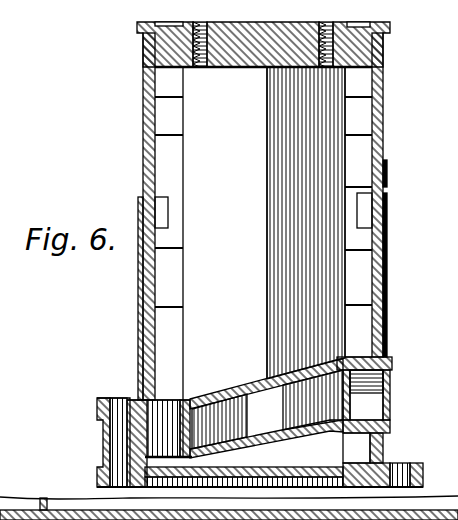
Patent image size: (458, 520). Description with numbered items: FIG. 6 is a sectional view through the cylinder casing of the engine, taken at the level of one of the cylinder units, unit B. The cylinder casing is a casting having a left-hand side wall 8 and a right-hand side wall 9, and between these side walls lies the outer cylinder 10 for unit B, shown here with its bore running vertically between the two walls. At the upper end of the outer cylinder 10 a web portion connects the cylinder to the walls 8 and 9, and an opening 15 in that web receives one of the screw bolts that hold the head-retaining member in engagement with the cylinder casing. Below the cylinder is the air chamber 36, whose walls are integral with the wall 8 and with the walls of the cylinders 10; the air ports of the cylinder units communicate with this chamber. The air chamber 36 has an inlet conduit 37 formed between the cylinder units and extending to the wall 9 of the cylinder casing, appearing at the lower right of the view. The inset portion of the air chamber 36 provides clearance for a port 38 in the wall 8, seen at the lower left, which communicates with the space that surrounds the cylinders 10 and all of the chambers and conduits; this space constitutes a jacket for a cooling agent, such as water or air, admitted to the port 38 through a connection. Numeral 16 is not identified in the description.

The side wall 8 is at (143, 113).
The side wall 9 is at (383, 110).
The outer cylinder 10 is at (281, 223).
The opening 15 is at (200, 70).
The cover block 16 is at (257, 58).
The air chamber 36 is at (205, 399).
The inlet conduit 37 is at (375, 408).
The port 38 is at (97, 443).
The unit B is at (218, 218).